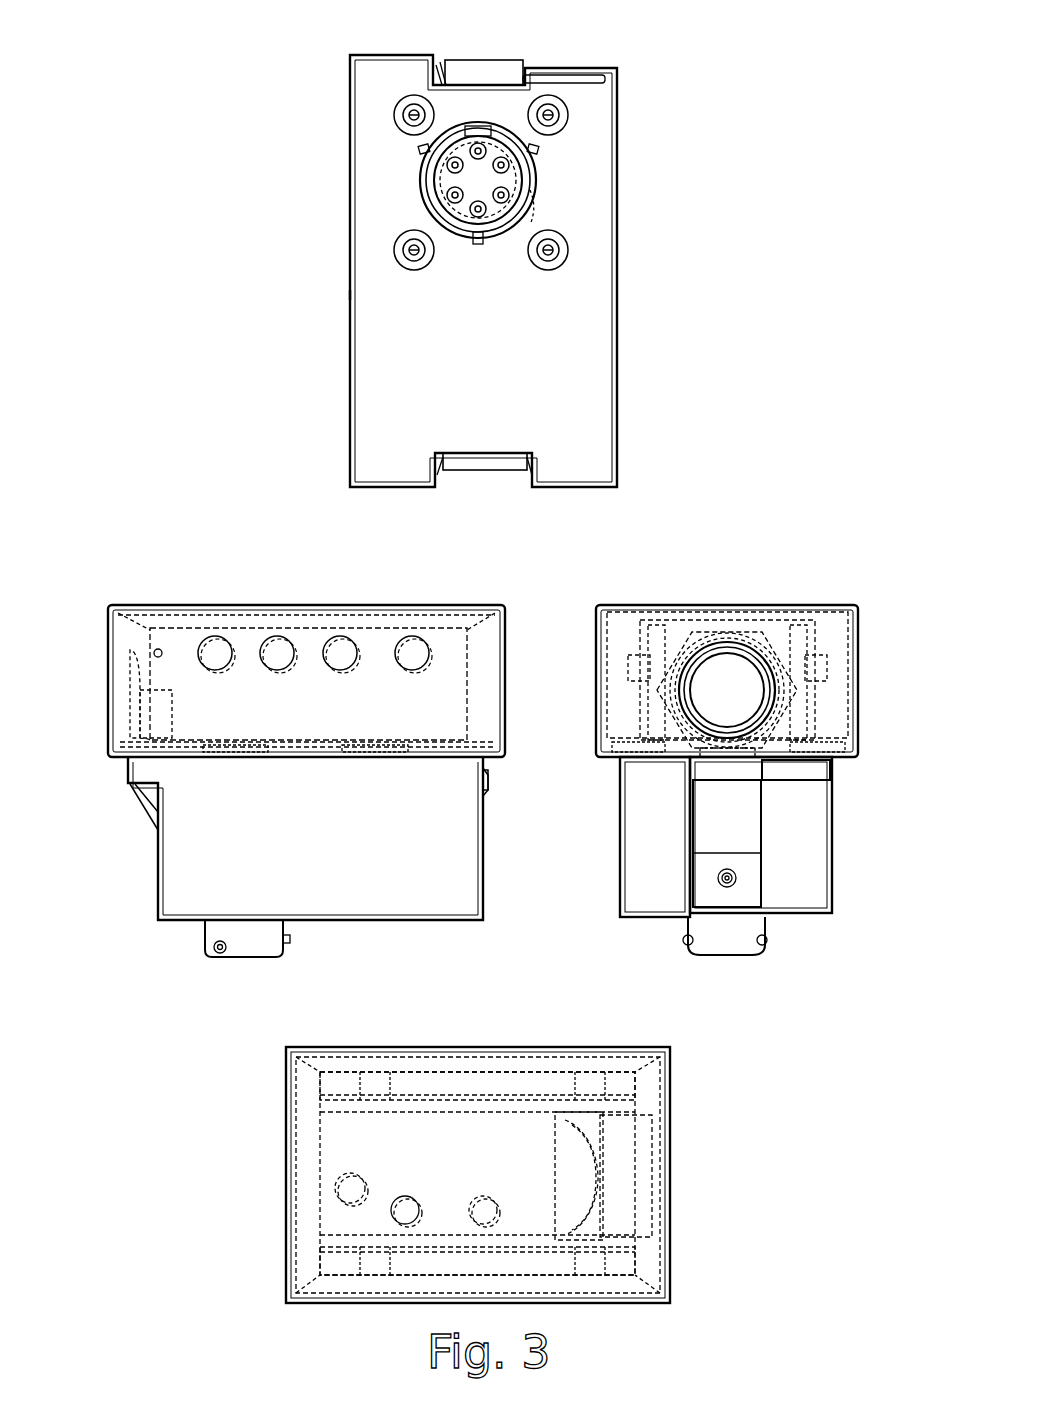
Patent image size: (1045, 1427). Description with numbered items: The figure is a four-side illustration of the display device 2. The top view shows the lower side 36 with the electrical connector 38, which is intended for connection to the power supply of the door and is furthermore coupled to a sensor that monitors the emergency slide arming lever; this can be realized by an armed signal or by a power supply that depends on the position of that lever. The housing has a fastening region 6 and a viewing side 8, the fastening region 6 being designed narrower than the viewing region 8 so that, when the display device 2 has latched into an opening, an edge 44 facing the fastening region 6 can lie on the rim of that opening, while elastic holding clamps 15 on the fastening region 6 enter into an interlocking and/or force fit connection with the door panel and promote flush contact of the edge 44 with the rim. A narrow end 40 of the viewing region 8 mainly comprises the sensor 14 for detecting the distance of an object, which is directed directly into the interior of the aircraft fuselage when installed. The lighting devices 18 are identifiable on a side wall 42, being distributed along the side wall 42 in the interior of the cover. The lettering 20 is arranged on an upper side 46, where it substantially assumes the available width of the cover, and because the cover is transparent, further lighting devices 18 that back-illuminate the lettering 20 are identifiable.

The display device 2 is at (640, 148).
The fastening region 6 is at (328, 290).
The viewing side 8 is at (518, 630).
The sensor 14 is at (735, 673).
The elastic holding clamps 15 is at (478, 70).
The lighting devices 18 is at (340, 653).
The lettering 20 is at (517, 1070).
The lower side 36 is at (592, 336).
The electrical connector 38 is at (405, 180).
The narrow end 40 is at (626, 622).
The side wall 42 is at (222, 612).
The edge 44 is at (455, 735).
The upper side 46 is at (350, 1147).